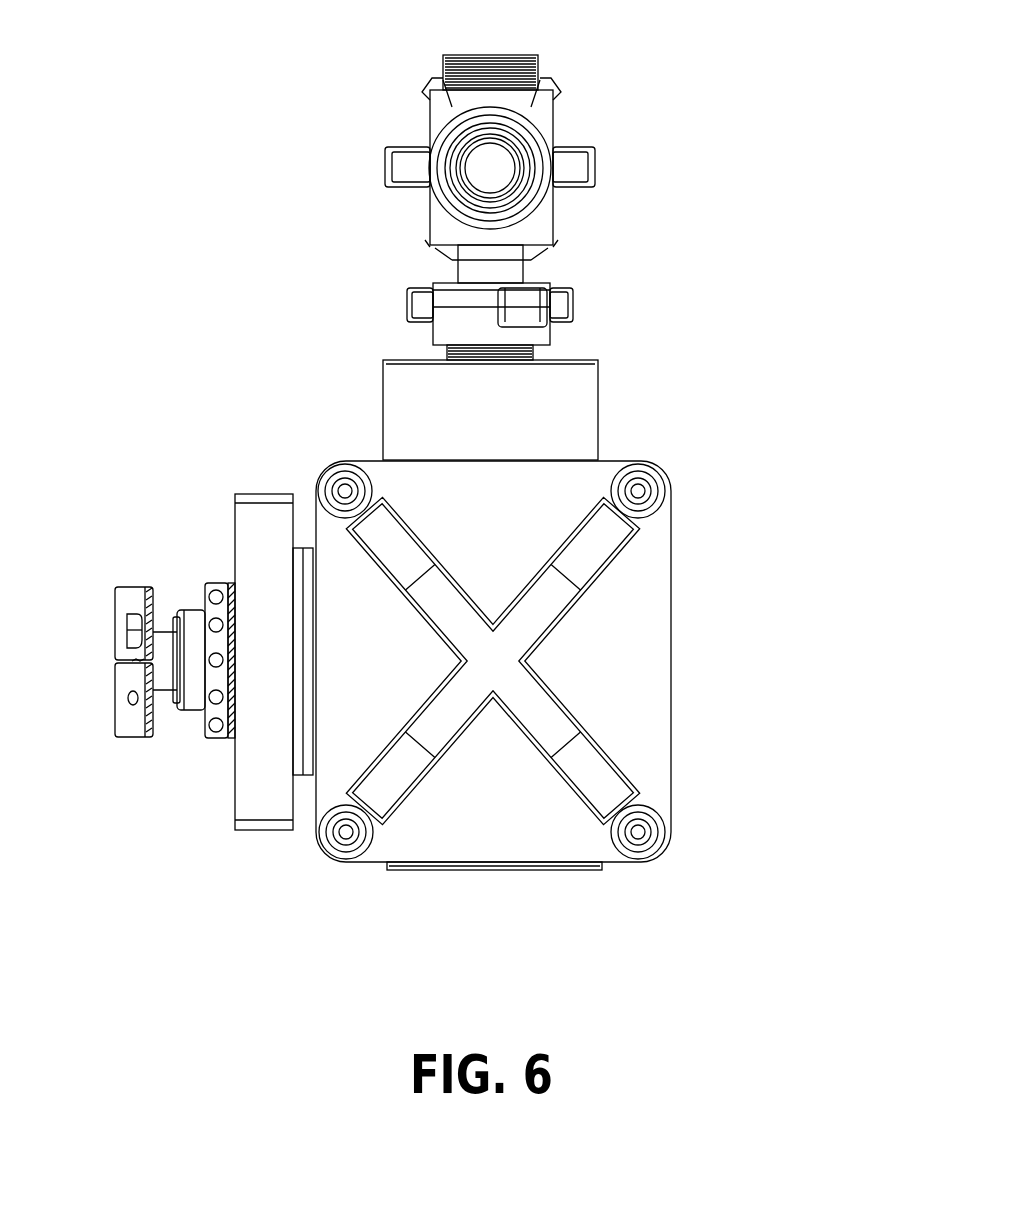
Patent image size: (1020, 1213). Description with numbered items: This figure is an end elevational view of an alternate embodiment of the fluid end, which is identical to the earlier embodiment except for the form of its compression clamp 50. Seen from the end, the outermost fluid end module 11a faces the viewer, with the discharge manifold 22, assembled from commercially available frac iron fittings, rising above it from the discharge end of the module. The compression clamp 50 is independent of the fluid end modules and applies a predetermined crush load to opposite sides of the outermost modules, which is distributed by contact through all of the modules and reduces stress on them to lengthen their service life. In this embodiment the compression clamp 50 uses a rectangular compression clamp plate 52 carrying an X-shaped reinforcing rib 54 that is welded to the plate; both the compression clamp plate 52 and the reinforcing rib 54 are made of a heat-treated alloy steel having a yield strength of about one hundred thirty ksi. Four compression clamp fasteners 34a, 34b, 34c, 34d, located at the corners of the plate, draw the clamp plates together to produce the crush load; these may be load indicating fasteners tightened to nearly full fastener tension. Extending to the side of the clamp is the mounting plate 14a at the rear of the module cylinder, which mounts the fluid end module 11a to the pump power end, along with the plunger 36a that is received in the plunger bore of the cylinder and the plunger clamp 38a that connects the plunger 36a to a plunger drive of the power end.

The discharge manifold 22 is at (565, 108).
The fluid end module 11a is at (512, 428).
The compression clamp 50 is at (516, 662).
The compression clamp plate 52 is at (638, 728).
The X-shaped reinforcing rib 54 is at (547, 600).
The compression clamp fastener 34a is at (345, 490).
The compression clamp fastener 34b is at (638, 492).
The compression clamp fastener 34c is at (347, 832).
The compression clamp fastener 34d is at (638, 832).
The mounting plate 14a is at (263, 802).
The plunger 36a is at (193, 697).
The plunger clamp 38a is at (135, 728).